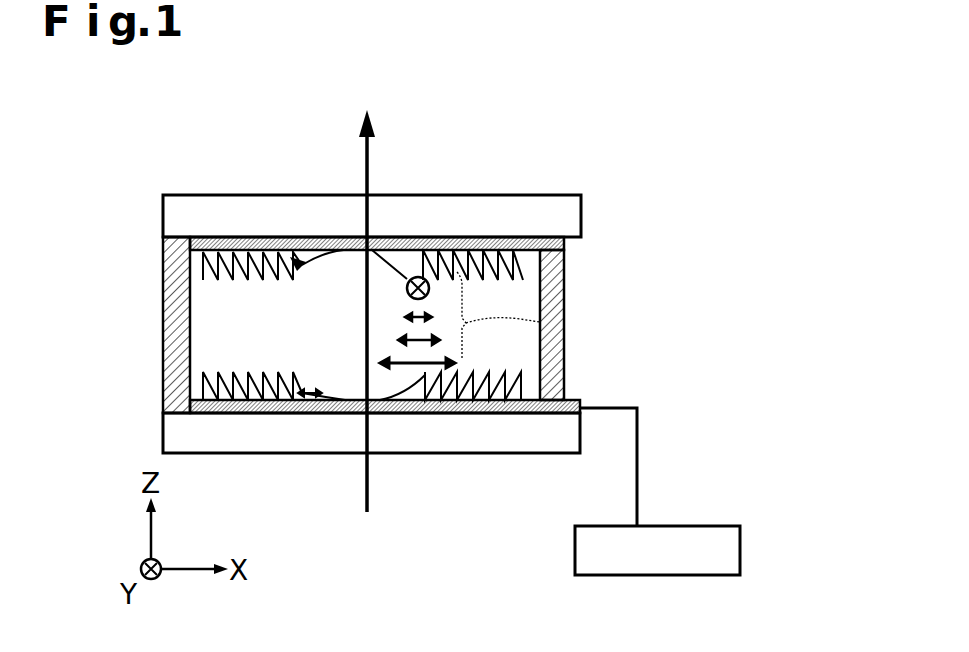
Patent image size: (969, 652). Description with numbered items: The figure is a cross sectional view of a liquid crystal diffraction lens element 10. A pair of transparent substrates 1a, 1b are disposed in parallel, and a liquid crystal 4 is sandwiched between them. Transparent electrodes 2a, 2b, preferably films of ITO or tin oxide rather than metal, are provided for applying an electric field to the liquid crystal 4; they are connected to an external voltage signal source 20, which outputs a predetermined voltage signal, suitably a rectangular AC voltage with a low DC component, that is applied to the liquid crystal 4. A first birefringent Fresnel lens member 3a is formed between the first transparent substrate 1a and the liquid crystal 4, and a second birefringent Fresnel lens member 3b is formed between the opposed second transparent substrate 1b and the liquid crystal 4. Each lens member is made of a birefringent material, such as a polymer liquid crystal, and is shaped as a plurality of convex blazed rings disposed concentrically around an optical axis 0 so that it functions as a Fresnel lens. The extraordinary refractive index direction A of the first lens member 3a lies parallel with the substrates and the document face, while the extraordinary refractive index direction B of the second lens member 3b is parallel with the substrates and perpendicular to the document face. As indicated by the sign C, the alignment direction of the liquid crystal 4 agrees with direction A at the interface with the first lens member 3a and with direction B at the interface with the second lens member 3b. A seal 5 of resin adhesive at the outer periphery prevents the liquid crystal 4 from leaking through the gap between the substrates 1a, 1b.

The first transparent substrate 1a is at (195, 439).
The second transparent substrate 1b is at (195, 213).
The transparent electrode 2a is at (163, 402).
The transparent electrode 2b is at (163, 241).
The first birefringent Fresnel lens member 3a is at (200, 373).
The second birefringent Fresnel lens member 3b is at (200, 266).
The liquid crystal 4 is at (228, 311).
The seal 5 is at (163, 340).
The liquid crystal diffraction lens element 10 is at (644, 205).
The external voltage signal source 20 is at (678, 525).
The extraordinary refractive index direction A is at (305, 398).
The extraordinary refractive index direction B is at (303, 258).
The alignment direction of the liquid crystal C is at (564, 322).
The optical axis 0 is at (373, 127).